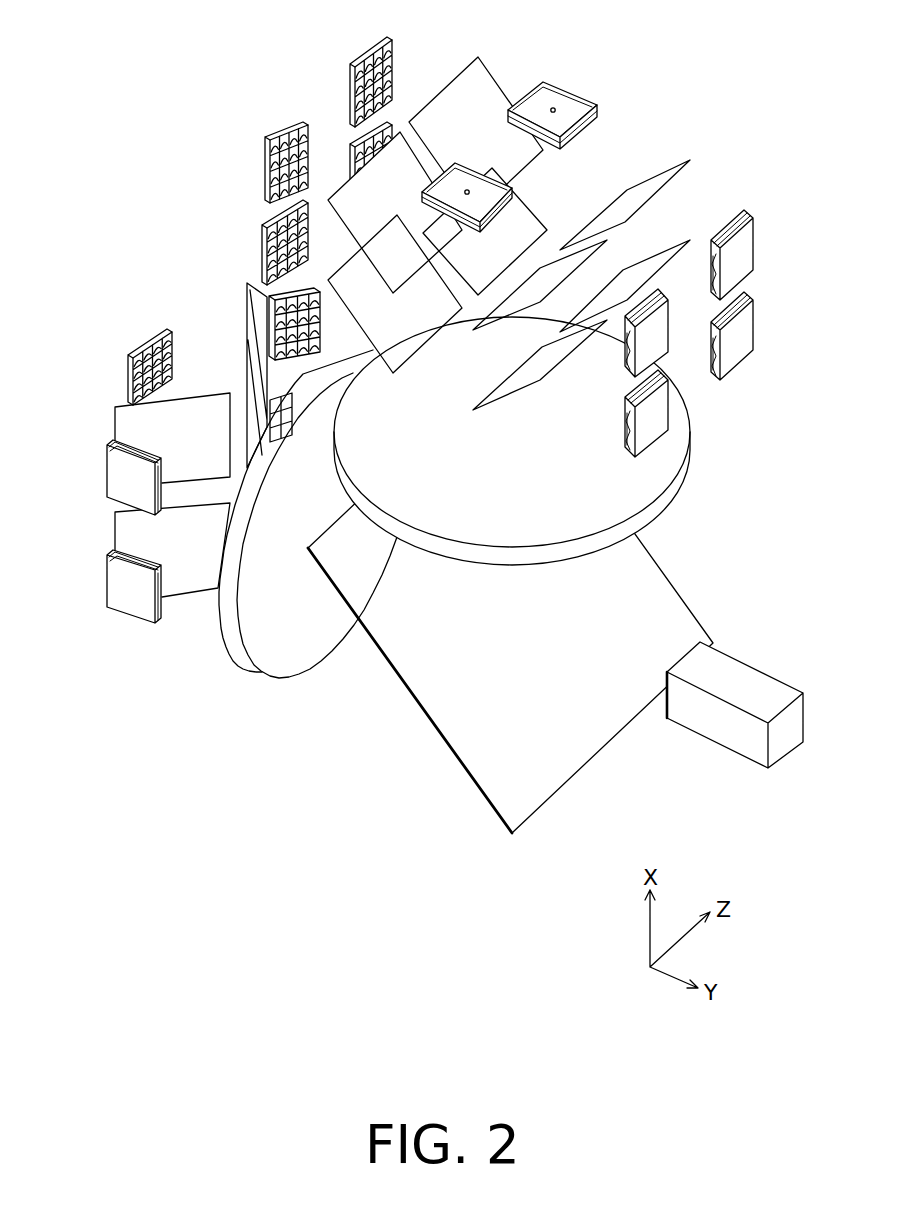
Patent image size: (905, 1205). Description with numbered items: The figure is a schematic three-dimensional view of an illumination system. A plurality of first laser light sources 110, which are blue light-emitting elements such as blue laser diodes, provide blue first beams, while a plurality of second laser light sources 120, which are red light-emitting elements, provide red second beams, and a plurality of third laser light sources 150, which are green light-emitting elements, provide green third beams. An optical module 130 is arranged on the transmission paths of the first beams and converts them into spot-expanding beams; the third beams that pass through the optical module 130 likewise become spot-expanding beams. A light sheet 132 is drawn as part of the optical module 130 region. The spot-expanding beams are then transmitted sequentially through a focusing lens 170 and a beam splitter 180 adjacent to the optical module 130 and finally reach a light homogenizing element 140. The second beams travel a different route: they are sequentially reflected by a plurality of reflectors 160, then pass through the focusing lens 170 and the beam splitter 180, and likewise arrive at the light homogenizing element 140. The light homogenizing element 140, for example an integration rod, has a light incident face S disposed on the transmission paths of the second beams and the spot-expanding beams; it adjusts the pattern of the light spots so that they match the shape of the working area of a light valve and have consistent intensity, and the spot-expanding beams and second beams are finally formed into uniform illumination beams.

The first laser light source 110 is at (312, 222).
The second laser light source 120 is at (110, 580).
The optical module 130 is at (651, 126).
The light sheet 132 is at (667, 165).
The light homogenizing element 140 is at (713, 727).
The third laser light source 150 is at (283, 127).
The reflector 160 is at (190, 578).
The focusing lens 170 is at (484, 581).
The beam splitter 180 is at (472, 765).
The light incident face S is at (687, 646).